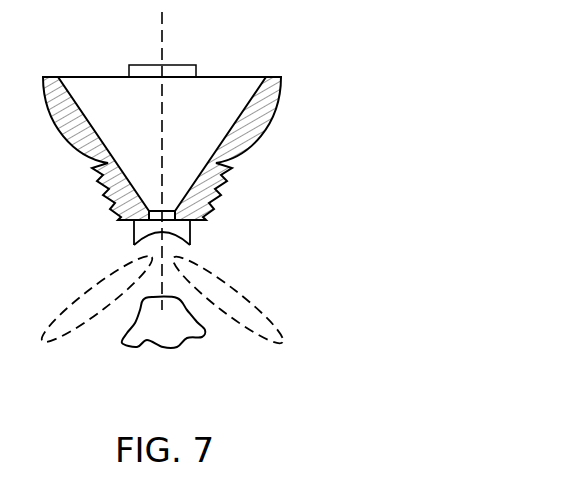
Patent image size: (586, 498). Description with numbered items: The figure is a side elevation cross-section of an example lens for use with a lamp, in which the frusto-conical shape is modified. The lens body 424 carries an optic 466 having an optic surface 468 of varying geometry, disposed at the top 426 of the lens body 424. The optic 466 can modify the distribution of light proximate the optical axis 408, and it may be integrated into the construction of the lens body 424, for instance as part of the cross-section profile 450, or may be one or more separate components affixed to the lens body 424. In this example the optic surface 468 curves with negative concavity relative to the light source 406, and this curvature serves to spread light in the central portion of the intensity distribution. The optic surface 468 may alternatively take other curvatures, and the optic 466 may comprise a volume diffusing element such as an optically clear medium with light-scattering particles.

The light source 406 is at (139, 63).
The optical axis 408 is at (163, 27).
The lens body 424 is at (340, 212).
The top 426 is at (260, 284).
The cross-section profile 450 is at (163, 355).
The optic 466 is at (213, 235).
The optic surface 468 is at (177, 242).